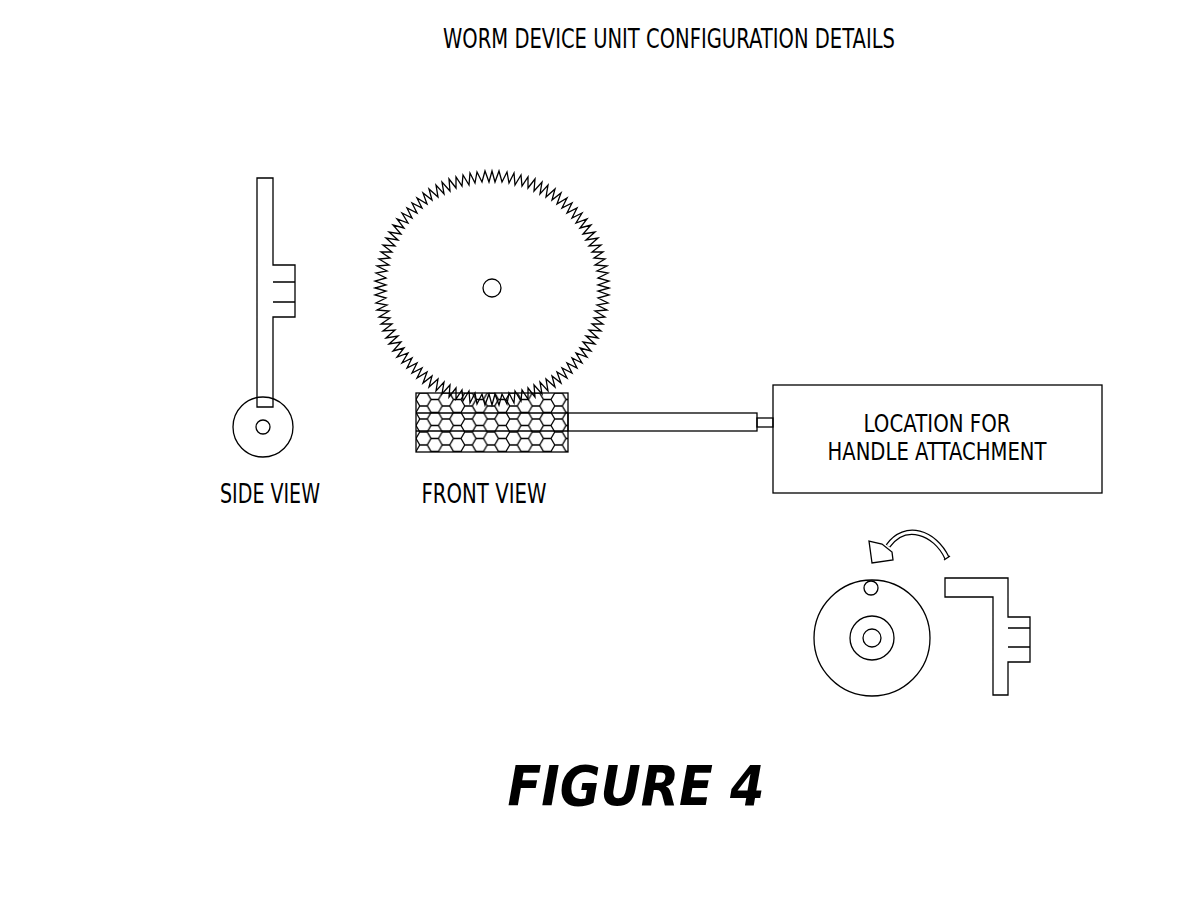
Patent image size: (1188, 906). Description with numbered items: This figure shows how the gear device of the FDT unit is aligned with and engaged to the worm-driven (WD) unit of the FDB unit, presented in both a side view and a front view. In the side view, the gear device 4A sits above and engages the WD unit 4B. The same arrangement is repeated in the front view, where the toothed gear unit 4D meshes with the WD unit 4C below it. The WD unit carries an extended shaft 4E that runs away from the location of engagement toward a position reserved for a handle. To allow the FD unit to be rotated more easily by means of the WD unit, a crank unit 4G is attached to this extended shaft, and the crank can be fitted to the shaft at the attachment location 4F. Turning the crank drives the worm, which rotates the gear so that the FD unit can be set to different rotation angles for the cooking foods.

The gear device (side view) 4A is at (253, 292).
The WD unit (side view) 4B is at (245, 427).
The WD unit (front view) 4C is at (473, 418).
The gear unit (front view) 4D is at (492, 258).
The extended shaft 4E is at (670, 392).
The crank attachment location 4F is at (882, 613).
The crank unit 4G is at (987, 612).